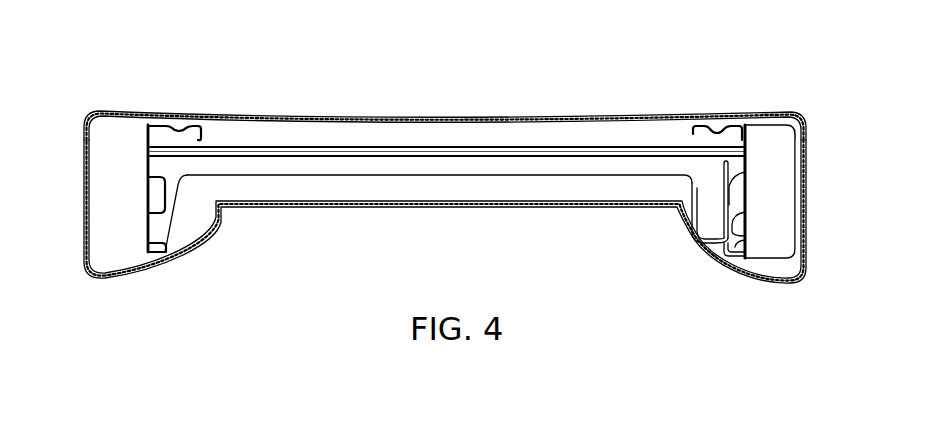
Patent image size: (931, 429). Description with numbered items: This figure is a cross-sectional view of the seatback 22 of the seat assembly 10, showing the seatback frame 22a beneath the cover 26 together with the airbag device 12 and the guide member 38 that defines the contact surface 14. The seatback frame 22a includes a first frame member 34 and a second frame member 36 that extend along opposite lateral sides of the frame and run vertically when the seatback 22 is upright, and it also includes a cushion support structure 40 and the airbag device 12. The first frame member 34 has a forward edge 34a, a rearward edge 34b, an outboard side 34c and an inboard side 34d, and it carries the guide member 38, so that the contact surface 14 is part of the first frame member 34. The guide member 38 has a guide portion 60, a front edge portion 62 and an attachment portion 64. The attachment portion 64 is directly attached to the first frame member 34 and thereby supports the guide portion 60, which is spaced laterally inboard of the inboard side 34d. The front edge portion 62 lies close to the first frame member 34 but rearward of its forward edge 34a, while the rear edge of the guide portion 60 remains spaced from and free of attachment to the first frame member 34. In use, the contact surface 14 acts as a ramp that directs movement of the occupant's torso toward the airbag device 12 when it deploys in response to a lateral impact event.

The seat assembly 10 is at (256, 57).
The airbag device 12 is at (773, 162).
The contact surface 14 is at (690, 236).
The seatback 22 is at (358, 108).
The seatback frame 22a is at (160, 127).
The cover 26 is at (392, 207).
The first frame member 34 is at (732, 127).
The forward edge 34a is at (733, 256).
The rearward edge 34b is at (693, 134).
The outboard side 34c is at (747, 226).
The inboard side 34d is at (747, 241).
The second frame member 36 is at (163, 195).
The guide member 38 is at (718, 193).
The cushion support structure 40 is at (546, 150).
The guide portion 60 is at (690, 212).
The front edge portion 62 is at (715, 257).
The attachment portion 64 is at (718, 170).